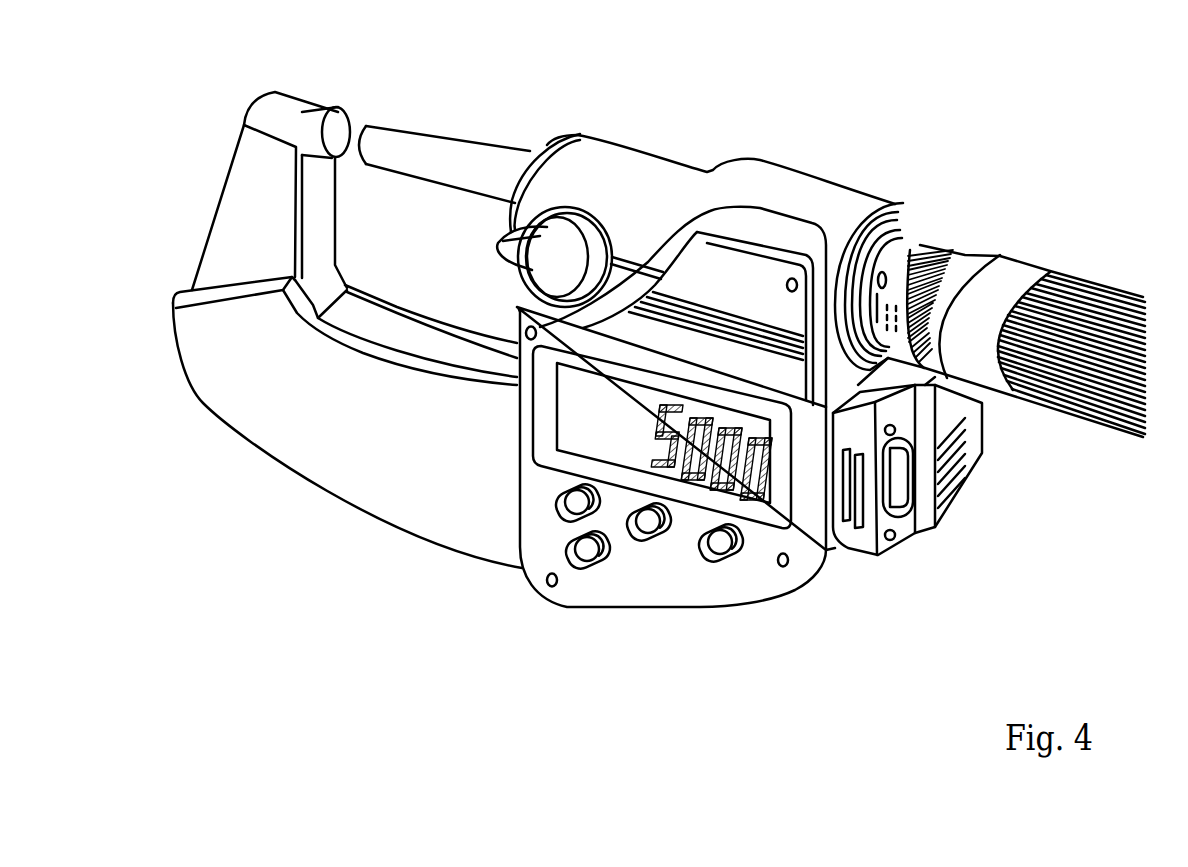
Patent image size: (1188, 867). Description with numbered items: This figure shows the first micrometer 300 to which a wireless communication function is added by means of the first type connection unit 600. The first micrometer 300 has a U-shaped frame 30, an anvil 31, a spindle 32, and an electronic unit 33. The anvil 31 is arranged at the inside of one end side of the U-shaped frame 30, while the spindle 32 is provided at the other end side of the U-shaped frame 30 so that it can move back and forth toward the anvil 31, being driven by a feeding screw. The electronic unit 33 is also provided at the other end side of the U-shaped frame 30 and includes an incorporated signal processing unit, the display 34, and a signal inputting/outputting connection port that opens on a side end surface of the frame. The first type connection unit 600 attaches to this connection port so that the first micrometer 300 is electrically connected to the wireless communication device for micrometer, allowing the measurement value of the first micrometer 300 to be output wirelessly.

The U-shaped frame 30 is at (228, 406).
The anvil 31 is at (318, 116).
The spindle 32 is at (429, 145).
The electronic unit 33 is at (707, 600).
The display 34 is at (633, 450).
The first micrometer 300 is at (1045, 243).
The first type connection unit 600 is at (942, 512).